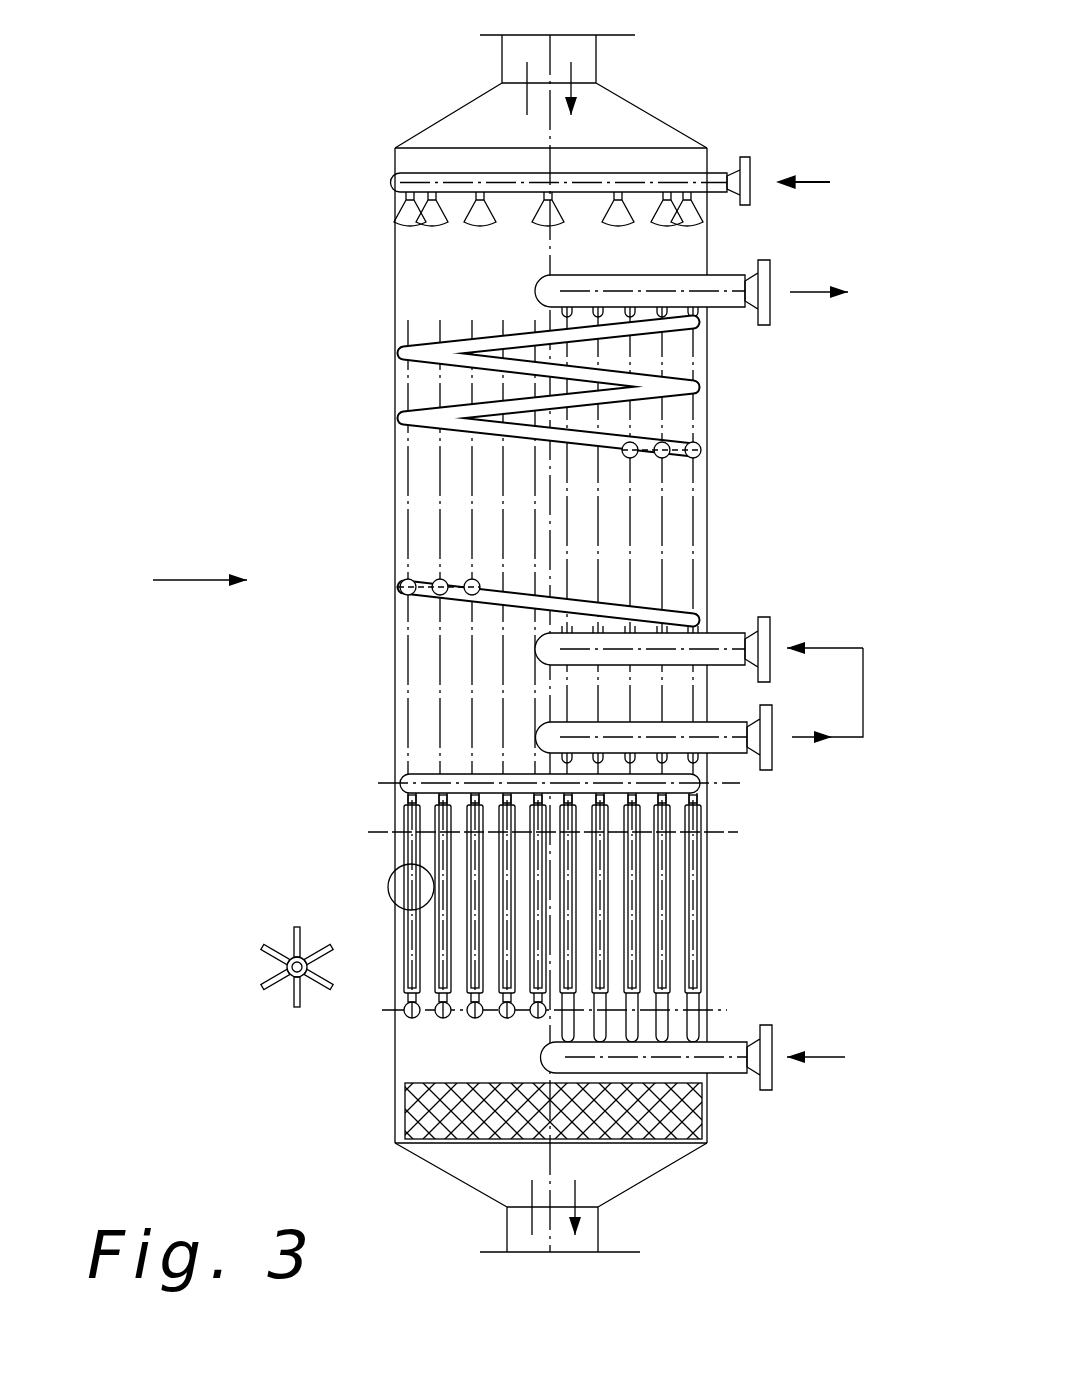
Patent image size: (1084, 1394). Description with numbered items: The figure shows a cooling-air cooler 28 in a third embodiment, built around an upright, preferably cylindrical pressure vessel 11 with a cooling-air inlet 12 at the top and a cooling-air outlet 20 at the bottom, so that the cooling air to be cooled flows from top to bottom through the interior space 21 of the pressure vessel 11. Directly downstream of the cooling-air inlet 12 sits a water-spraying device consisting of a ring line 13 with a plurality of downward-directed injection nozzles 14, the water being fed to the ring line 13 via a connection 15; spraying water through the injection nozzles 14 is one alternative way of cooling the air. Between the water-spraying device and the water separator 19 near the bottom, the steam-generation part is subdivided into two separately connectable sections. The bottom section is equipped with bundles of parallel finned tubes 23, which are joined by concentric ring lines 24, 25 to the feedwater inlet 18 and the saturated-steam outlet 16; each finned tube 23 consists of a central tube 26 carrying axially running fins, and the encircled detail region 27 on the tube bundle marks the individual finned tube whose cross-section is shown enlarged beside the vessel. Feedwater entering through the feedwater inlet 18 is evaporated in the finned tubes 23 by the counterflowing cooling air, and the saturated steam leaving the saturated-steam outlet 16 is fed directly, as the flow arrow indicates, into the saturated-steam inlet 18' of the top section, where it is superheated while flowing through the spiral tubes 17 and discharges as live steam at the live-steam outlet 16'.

In FIG. 3, the pressure vessel 11 is at (708, 490).
In FIG. 3, the cooling-air inlet 12 is at (587, 62).
In FIG. 3, the ring line 13 is at (395, 176).
In FIG. 3, the injection nozzles 14 is at (397, 210).
In FIG. 3, the connection 15 is at (750, 165).
In FIG. 3, the saturated-steam outlet 16 is at (698, 771).
In FIG. 3, the live-steam outlet 16' is at (726, 265).
In FIG. 3, the spiral tubes 17 is at (700, 385).
In FIG. 3, the feedwater inlet 18 is at (693, 1101).
In FIG. 3, the saturated-steam inlet 18' is at (665, 633).
In FIG. 3, the water separator 19 is at (440, 1150).
In FIG. 3, the cooling-air outlet 20 is at (592, 1238).
In FIG. 3, the interior space 21 is at (427, 682).
In FIG. 3, the finned tubes 23 is at (697, 888).
In FIG. 3a, the finned tubes 23 is at (225, 1002).
In FIG. 3, the ring lines 24 is at (400, 774).
In FIG. 3, the ring lines 25 is at (397, 1018).
In FIG. 3a, the central tube 26 is at (285, 970).
In FIG. 3, the detail region 27 is at (350, 932).
In FIG. 3a, the detail region 27 is at (297, 928).
In FIG. 3, the cooling-air cooler 28 is at (162, 582).